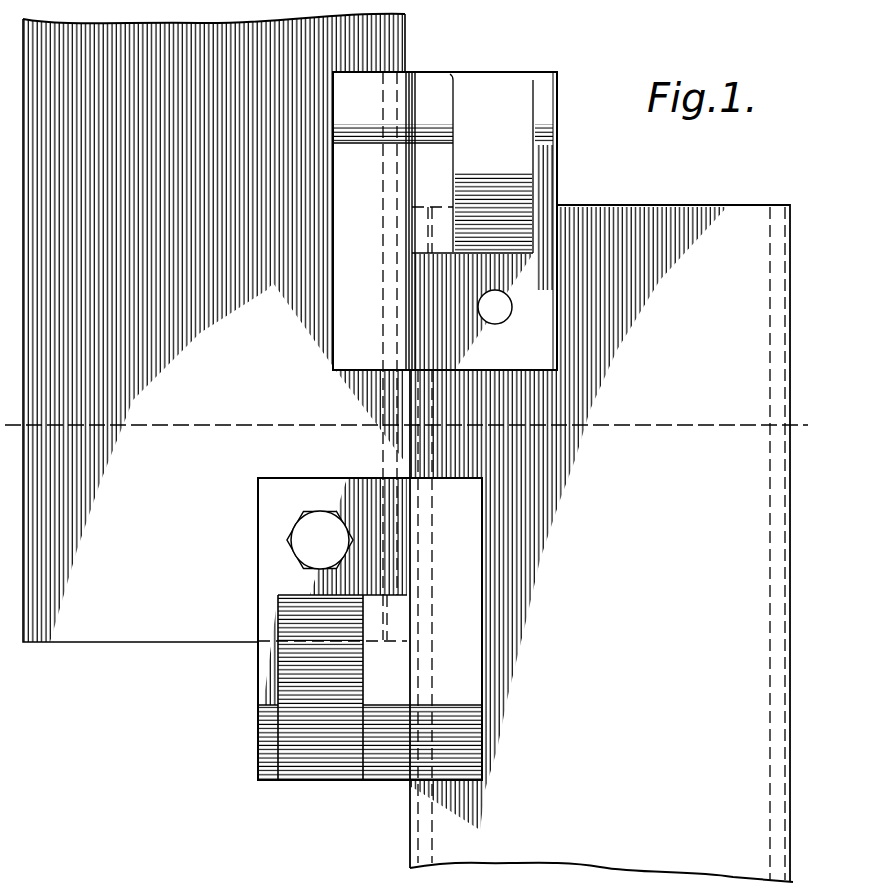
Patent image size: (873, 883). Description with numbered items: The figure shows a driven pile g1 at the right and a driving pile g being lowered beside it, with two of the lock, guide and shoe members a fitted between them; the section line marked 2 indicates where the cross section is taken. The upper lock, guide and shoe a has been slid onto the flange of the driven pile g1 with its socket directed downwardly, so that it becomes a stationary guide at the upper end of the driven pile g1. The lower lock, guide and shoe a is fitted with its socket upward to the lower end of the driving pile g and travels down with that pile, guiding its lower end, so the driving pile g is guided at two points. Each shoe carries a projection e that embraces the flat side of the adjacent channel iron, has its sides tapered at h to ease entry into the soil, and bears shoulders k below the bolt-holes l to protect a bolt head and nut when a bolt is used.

The driving pile g is at (214, 328).
The driven pile g1 is at (601, 477).
The projection e is at (407, 426).
The lock, guide and shoe a is at (403, 452).
The tapered sides of the shoe h is at (395, 752).
The shoulders k is at (296, 594).
The bolt-holes l is at (499, 316).
The section line arrow 2 is at (615, 382).